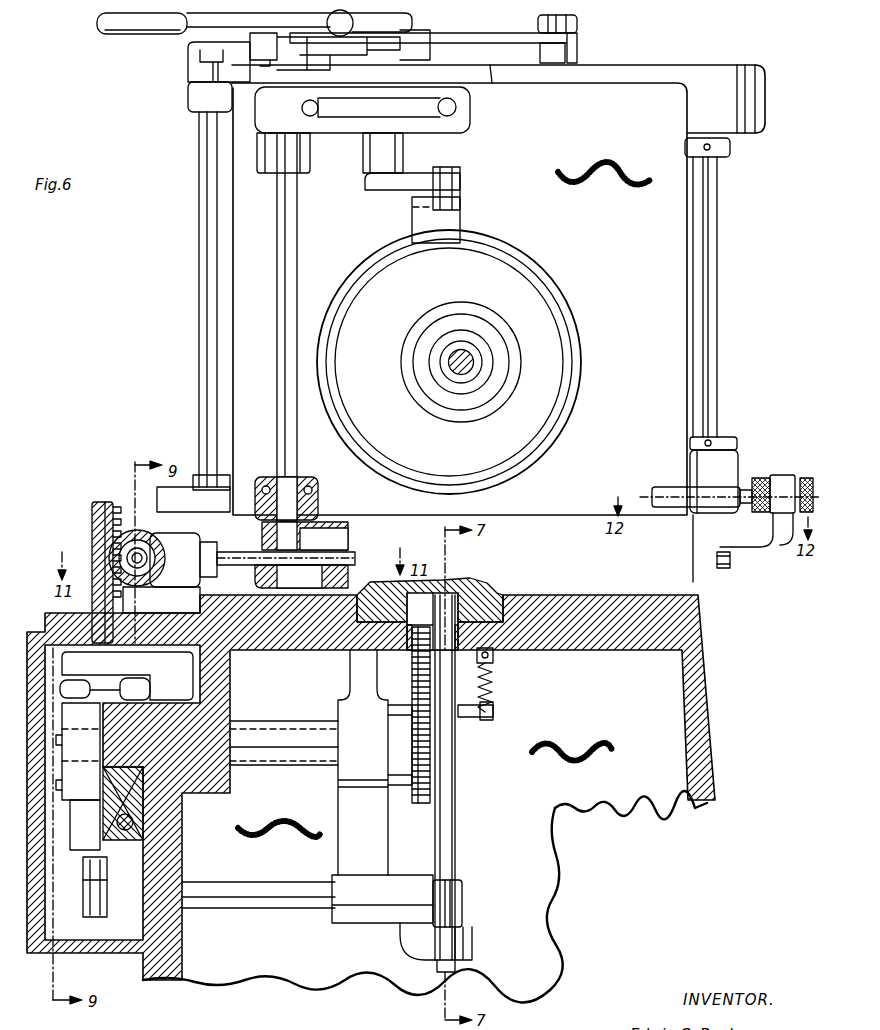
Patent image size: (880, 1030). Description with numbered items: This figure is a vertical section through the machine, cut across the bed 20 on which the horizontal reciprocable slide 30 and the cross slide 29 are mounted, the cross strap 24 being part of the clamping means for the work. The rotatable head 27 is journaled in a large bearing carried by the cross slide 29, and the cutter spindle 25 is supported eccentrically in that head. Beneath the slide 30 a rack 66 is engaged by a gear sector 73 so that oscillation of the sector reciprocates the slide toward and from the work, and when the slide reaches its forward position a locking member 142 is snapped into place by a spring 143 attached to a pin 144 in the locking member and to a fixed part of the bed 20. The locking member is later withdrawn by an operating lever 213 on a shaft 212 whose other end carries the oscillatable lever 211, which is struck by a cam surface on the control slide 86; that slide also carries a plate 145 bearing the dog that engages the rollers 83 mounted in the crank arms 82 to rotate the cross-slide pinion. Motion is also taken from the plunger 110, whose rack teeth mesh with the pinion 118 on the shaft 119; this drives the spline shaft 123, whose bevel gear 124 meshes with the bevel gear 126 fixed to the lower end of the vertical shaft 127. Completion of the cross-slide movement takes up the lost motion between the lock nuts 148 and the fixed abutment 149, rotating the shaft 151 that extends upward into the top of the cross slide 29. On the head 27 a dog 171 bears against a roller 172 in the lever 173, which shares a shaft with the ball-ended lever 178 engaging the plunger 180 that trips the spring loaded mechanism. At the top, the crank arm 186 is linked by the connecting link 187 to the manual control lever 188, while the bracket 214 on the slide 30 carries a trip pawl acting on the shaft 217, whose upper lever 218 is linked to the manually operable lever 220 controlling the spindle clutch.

The bed 20 is at (708, 662).
The cross strap 24 is at (297, 740).
The cutter spindle 25 is at (470, 364).
The rotatable head 27 is at (535, 293).
The cross slide 29 is at (686, 241).
The horizontal reciprocable slide 30 is at (690, 586).
The rack 66 is at (449, 584).
The gear sector 73 is at (412, 808).
The crank arms 82 is at (185, 671).
The roller 83 is at (150, 696).
The slide 86 is at (140, 843).
The plunger 110 is at (110, 518).
The pinion 118 is at (140, 530).
The shaft 119 is at (128, 556).
The spline shaft 123 is at (238, 562).
The bevel gear 124 is at (316, 545).
The bevel gear 126 is at (315, 512).
The vertical shaft 127 is at (278, 451).
The locking member 142 is at (457, 828).
The spring 143 is at (495, 689).
The pin 144 is at (496, 711).
The plate 145 is at (100, 806).
The lock nuts 148 is at (752, 478).
The fixed abutment 149 is at (775, 483).
The shaft 151 is at (704, 277).
The dog 171 is at (447, 224).
The roller 172 is at (460, 198).
The lever 173 is at (397, 183).
The ball-ended lever 178 is at (420, 112).
The plunger 180 is at (456, 107).
The crank arm 186 is at (560, 24).
The connecting link 187 is at (490, 41).
The manual control lever 188 is at (355, 23).
The oscillatable lever 211 is at (93, 912).
The shaft 212 is at (276, 878).
The operating lever 213 is at (462, 897).
The bracket 214 is at (180, 490).
The shaft 217 is at (203, 131).
The lever 218 is at (200, 61).
The manually operable lever 220 is at (157, 22).